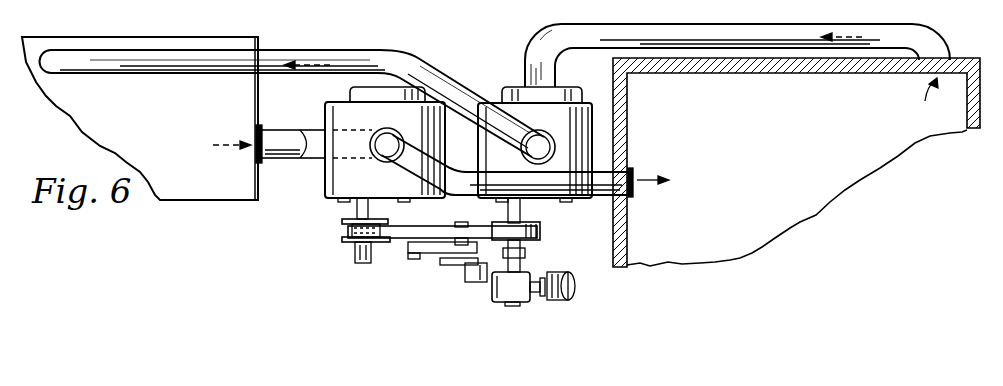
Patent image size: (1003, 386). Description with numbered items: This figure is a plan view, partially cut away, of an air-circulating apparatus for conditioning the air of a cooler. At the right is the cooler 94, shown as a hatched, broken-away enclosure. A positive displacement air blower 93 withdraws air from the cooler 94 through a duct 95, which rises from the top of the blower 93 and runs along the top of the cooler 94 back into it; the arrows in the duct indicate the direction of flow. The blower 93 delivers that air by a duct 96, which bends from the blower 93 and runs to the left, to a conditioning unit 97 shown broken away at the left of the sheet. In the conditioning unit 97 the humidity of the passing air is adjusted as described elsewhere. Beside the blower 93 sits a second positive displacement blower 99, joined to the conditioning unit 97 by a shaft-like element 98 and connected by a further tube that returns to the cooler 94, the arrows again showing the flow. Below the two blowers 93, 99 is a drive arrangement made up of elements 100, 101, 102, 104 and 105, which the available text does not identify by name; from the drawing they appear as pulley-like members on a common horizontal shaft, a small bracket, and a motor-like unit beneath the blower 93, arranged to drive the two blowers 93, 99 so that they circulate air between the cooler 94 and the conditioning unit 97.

The positive displacement air blower 93 is at (563, 112).
The cooler 94 is at (808, 187).
The duct 95 is at (645, 33).
The duct 96 is at (400, 68).
The conditioning unit 97 is at (86, 108).
The shaft 98 is at (292, 140).
The positive displacement blower 99 is at (322, 191).
The pulley 100 is at (346, 242).
The drive shaft 101 is at (405, 232).
The collar 102 is at (539, 238).
The bracket 104 is at (462, 221).
The motor 105 is at (490, 292).